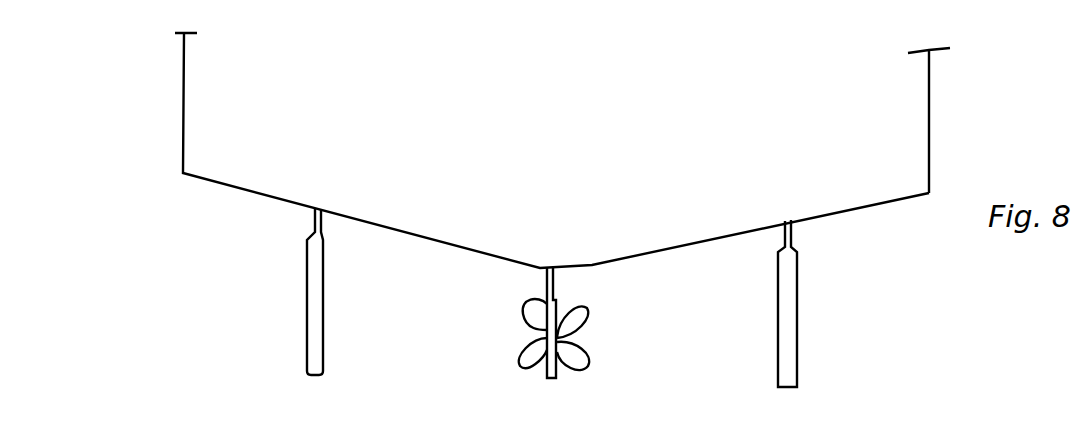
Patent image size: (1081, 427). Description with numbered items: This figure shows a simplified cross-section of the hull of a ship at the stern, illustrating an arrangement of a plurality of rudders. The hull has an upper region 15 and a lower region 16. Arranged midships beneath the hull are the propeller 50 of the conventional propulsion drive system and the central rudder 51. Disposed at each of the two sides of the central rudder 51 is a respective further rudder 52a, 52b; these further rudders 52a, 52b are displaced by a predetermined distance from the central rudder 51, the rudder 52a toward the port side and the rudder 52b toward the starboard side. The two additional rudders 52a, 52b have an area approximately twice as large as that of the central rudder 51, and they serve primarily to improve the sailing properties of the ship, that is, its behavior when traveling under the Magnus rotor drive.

The upper region 15 is at (929, 110).
The lower region 16 is at (222, 199).
The propeller 50 is at (587, 312).
The central rudder 51 is at (555, 378).
The further rudder 52a is at (320, 344).
The further rudder 52b is at (797, 330).